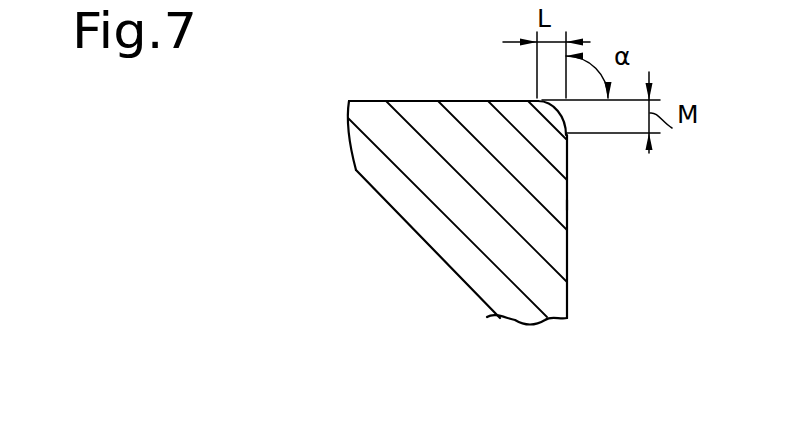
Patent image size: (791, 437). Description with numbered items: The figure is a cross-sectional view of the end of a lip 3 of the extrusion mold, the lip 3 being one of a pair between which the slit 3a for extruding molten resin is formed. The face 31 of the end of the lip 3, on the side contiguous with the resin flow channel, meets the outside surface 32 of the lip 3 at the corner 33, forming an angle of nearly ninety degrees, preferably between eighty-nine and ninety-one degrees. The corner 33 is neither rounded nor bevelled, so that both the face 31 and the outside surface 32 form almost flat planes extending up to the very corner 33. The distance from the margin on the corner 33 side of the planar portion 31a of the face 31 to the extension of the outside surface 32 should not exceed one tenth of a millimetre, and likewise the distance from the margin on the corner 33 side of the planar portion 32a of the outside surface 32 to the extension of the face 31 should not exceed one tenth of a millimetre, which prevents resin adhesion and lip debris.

The lip 3 is at (478, 169).
The slit 3a is at (372, 82).
The face contiguous with the resin flow channel 31 is at (400, 103).
The planar portion of the face 31a is at (468, 100).
The outside surface 32 is at (567, 232).
The planar portion of the outside surface 32a is at (567, 179).
The corner 33 is at (556, 119).